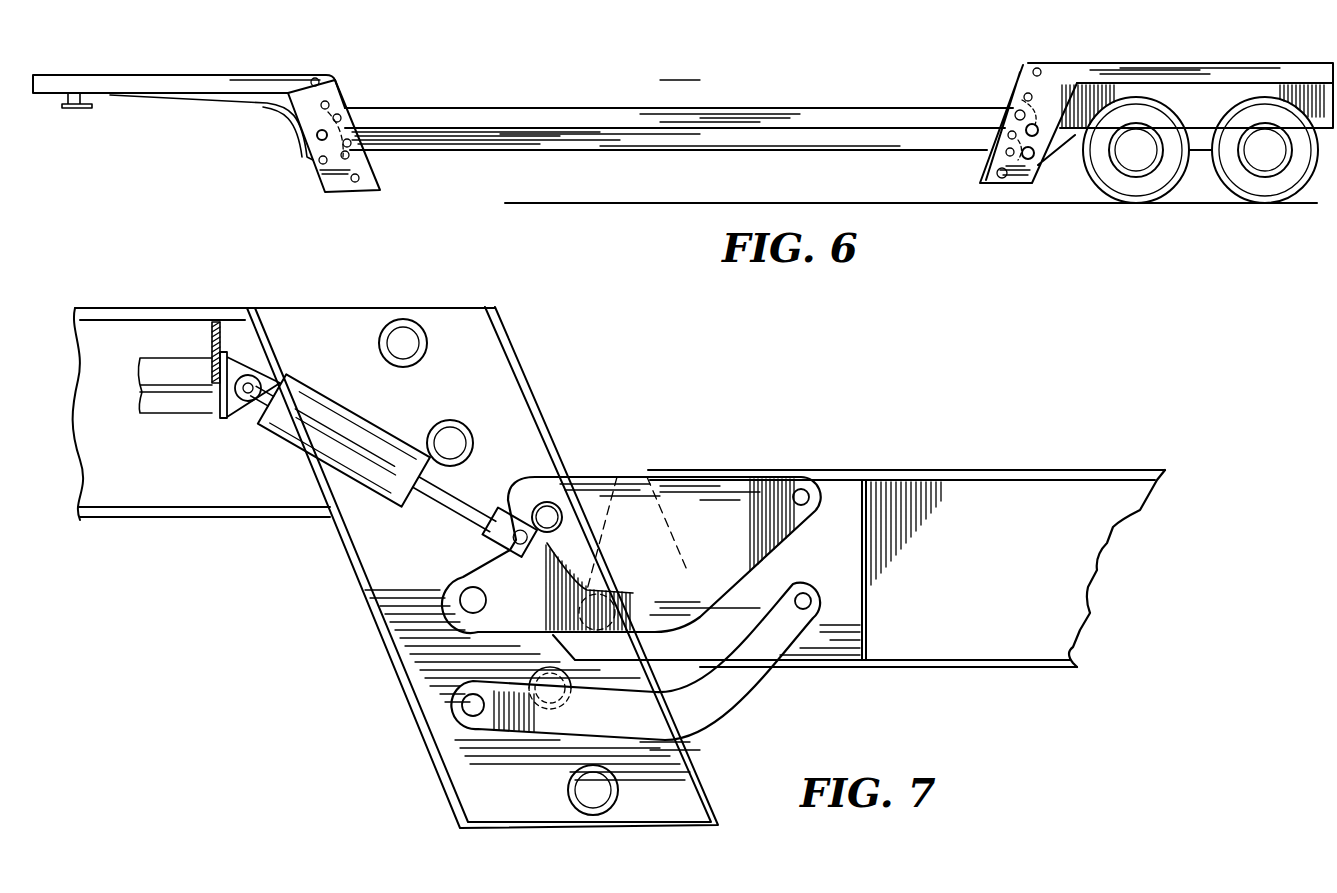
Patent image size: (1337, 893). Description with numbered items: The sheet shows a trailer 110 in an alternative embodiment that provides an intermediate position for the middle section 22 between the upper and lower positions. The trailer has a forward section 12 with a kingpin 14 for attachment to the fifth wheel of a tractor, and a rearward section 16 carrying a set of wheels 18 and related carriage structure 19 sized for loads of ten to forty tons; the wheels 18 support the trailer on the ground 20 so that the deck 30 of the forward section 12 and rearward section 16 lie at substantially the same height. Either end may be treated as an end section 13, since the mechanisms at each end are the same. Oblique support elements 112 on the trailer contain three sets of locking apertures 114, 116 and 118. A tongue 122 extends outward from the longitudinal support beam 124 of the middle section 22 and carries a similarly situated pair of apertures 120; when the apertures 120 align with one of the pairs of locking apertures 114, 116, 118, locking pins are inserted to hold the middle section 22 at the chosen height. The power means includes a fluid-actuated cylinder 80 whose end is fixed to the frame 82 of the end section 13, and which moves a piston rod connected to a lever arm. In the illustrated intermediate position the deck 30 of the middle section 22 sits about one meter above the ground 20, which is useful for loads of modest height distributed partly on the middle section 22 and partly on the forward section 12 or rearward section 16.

In FIG. 6, the forward section 12 is at (197, 82).
In FIG. 6, the kingpin 14 is at (80, 110).
In FIG. 6, the rearward section 16 is at (1238, 68).
In FIG. 6, the wheels 18 is at (1267, 190).
In FIG. 6, the carriage structure 19 is at (1200, 148).
In FIG. 6, the ground 20 is at (864, 198).
In FIG. 6, the middle section 22 is at (750, 138).
In FIG. 7, the middle section 22 is at (993, 466).
In FIG. 6, the deck 30 is at (639, 107).
In FIG. 6, the trailer 110 is at (797, 84).
In FIG. 6, the oblique support elements 112 is at (320, 145).
In FIG. 7, the oblique support elements 112 is at (428, 685).
In FIG. 6, the locking apertures 116 is at (347, 143).
In FIG. 7, the end section 13 is at (180, 303).
In FIG. 7, the frame 82 is at (210, 333).
In FIG. 7, the fluid-actuated cylinder 80 is at (340, 423).
In FIG. 7, the locking apertures 114 is at (418, 352).
In FIG. 7, the tongue 122 is at (615, 490).
In FIG. 7, the apertures 120 is at (563, 520).
In FIG. 7, the locking apertures 118 is at (532, 763).
In FIG. 7, the longitudinal support beam 124 is at (963, 628).